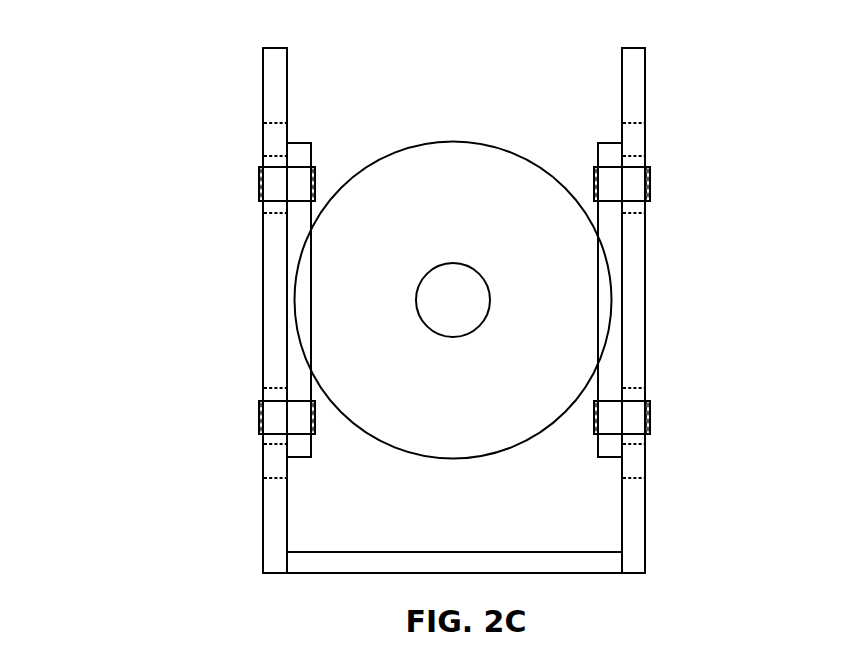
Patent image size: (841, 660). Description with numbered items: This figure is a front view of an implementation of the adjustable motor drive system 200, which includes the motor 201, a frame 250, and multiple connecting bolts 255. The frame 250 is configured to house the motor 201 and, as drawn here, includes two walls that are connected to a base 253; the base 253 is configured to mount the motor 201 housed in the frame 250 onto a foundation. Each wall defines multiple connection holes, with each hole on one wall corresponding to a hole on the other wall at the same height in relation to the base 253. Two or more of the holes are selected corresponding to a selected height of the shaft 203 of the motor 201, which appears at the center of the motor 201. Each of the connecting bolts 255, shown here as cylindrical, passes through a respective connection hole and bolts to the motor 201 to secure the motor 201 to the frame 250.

The adjustable motor drive system 200 is at (93, 82).
The motor 201 is at (501, 148).
The shaft 203 is at (453, 300).
The frame 250 is at (670, 534).
The base 253 is at (275, 561).
The connecting bolts 255 is at (259, 183).